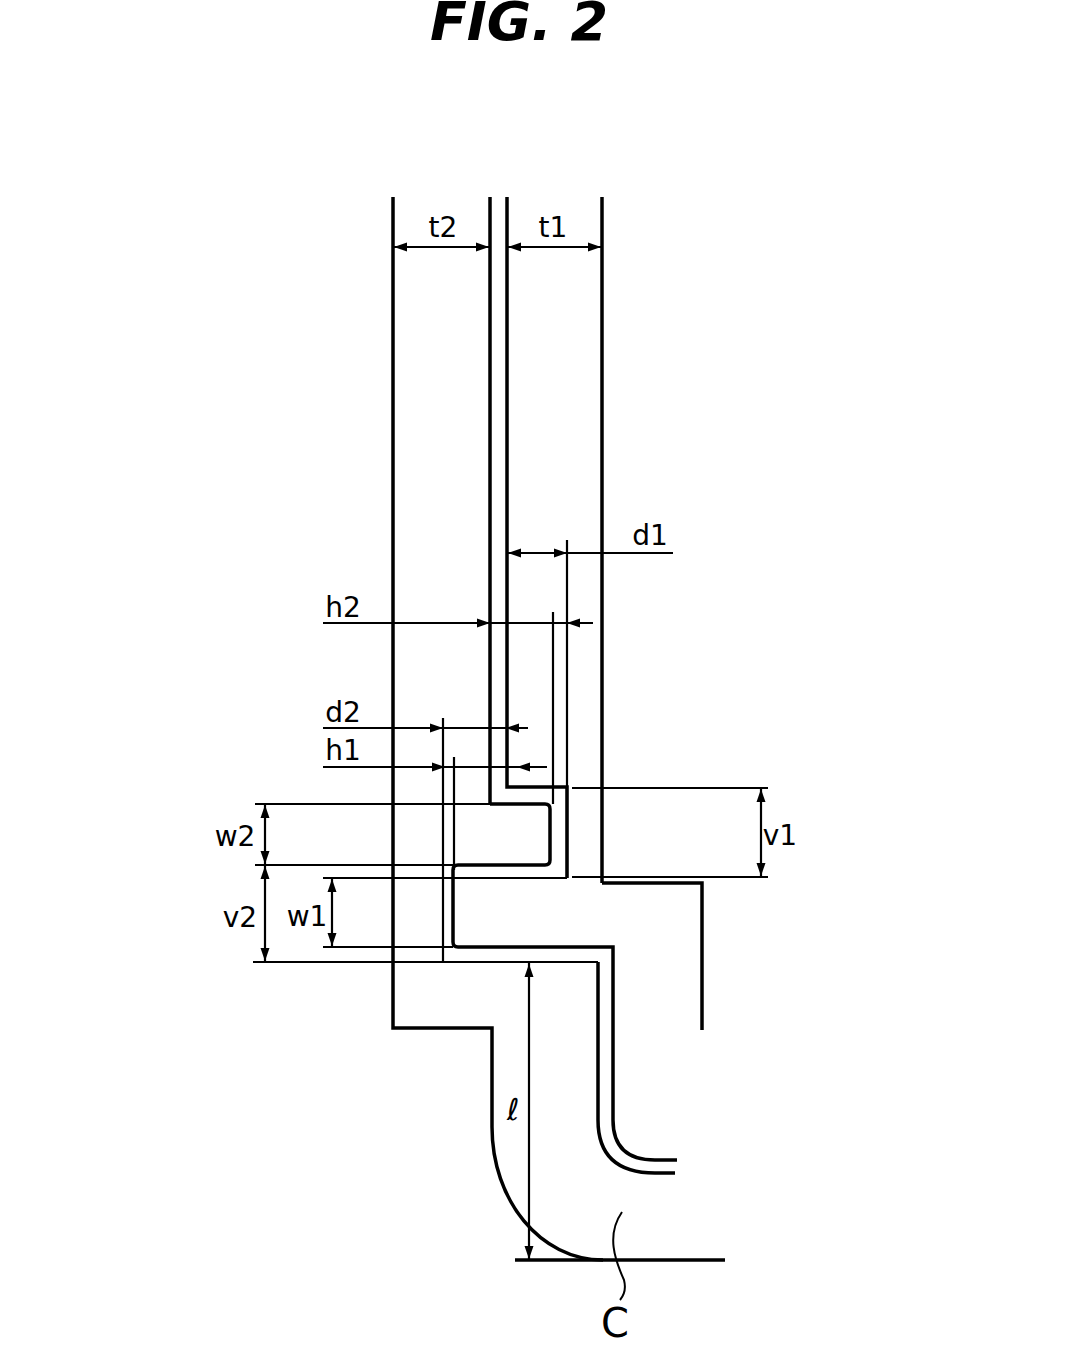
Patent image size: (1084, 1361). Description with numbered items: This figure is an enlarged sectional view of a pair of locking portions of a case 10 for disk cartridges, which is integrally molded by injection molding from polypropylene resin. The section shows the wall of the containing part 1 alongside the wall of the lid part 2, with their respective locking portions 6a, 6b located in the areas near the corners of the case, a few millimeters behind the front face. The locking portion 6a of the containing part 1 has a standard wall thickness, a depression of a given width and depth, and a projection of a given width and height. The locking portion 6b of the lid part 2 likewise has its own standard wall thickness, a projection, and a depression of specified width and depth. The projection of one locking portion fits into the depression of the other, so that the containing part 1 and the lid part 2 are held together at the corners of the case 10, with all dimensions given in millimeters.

The case for disk cartridges 10 is at (640, 213).
The containing part 1 is at (612, 381).
The lid part 2 is at (384, 392).
The locking portion 6a is at (674, 771).
The locking portion 6b is at (302, 745).